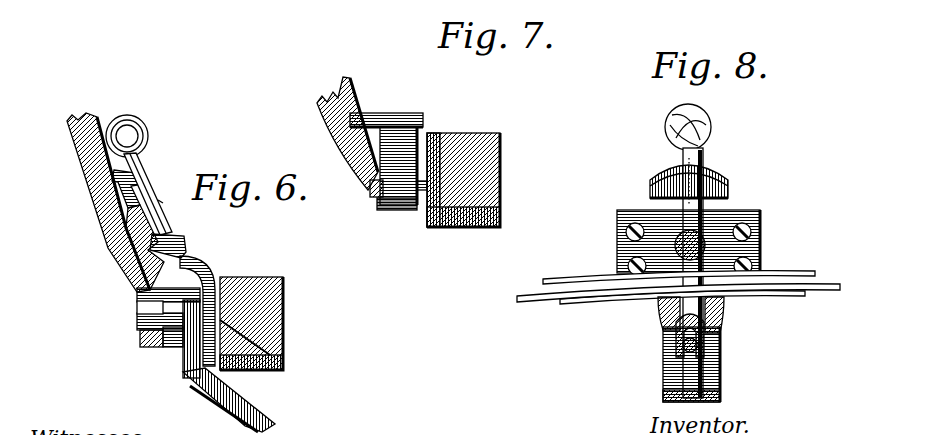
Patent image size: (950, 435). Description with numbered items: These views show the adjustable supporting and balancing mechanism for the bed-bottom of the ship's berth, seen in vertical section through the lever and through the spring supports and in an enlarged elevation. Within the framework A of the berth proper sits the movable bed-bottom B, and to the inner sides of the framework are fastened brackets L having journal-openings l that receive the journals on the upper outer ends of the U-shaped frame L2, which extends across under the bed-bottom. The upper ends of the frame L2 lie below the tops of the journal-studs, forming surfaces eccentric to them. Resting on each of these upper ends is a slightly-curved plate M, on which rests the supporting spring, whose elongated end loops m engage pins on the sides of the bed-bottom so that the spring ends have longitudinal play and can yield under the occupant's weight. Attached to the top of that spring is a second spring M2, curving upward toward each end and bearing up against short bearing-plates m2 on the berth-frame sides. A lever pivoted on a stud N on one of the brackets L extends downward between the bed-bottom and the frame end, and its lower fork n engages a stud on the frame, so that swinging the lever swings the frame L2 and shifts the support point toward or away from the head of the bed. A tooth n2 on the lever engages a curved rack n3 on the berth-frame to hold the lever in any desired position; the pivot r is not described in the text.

In FIG. 6, the framework of the berth A is at (86, 166).
In FIG. 7, the framework of the berth A is at (350, 88).
In FIG. 6, the movable bed-bottom B is at (268, 318).
In FIG. 7, the movable bed-bottom B is at (500, 174).
In FIG. 6, the stud N is at (183, 258).
In FIG. 8, the fork n is at (666, 347).
In FIG. 6, the tooth n2 is at (139, 174).
In FIG. 6, the curved rack n3 is at (101, 200).
In FIG. 8, the curved rack n3 is at (729, 172).
In FIG. 8, the slightly-curved plate M is at (652, 301).
In FIG. 6, the second spring M2 is at (190, 283).
In FIG. 7, the second spring M2 is at (418, 138).
In FIG. 8, the second spring M2 is at (580, 280).
In FIG. 6, the loops m is at (175, 352).
In FIG. 7, the loops m is at (408, 211).
In FIG. 7, the lugs or short bearing-plates m2 is at (392, 117).
In FIG. 6, the brackets L is at (137, 290).
In FIG. 8, the brackets L is at (760, 246).
In FIG. 6, the U-shaped frame L2 is at (246, 410).
In FIG. 8, the U-shaped frame L2 is at (718, 377).
In FIG. 6, the journal-openings l is at (140, 340).
In FIG. 8, the pivot pin r is at (675, 245).